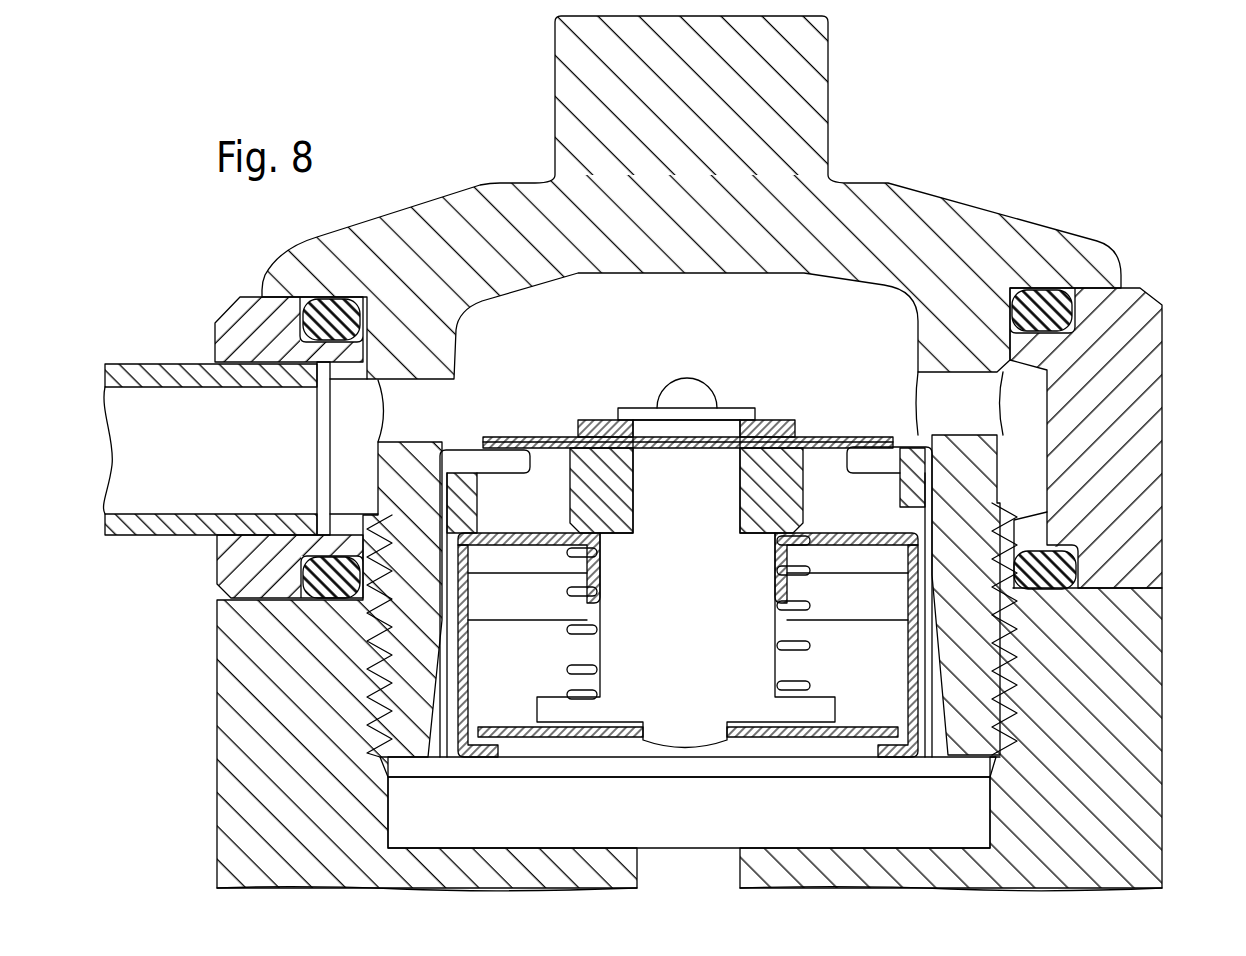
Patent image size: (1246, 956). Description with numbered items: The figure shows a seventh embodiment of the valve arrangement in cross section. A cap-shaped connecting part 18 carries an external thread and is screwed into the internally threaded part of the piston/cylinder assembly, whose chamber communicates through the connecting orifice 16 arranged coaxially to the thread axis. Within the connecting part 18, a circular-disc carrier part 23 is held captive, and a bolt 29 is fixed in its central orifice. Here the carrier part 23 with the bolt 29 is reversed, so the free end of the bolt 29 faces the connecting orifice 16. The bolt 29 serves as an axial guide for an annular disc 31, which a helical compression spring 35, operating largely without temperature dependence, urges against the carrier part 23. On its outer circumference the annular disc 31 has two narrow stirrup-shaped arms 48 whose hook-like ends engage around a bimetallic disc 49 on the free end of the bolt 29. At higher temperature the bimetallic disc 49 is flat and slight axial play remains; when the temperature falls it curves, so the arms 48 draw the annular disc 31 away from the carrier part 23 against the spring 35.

The connecting orifice 16 is at (681, 863).
The connecting part 18 is at (1013, 241).
The carrier part 23 is at (925, 479).
The bolt 29 is at (701, 672).
The annular disc 31 is at (868, 540).
The helical compression spring 35 is at (562, 592).
The stirrup-shaped arms 48 is at (470, 679).
The bimetallic disc 49 is at (860, 733).